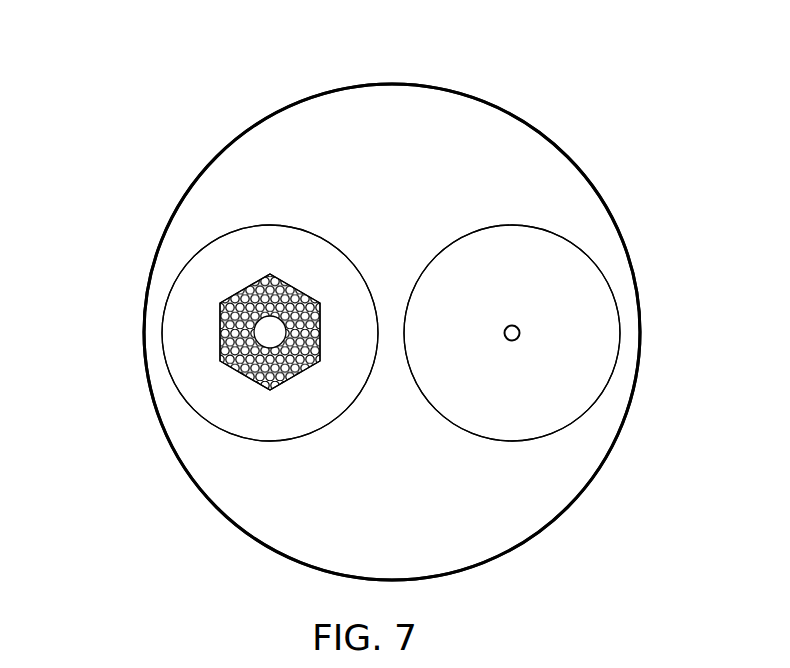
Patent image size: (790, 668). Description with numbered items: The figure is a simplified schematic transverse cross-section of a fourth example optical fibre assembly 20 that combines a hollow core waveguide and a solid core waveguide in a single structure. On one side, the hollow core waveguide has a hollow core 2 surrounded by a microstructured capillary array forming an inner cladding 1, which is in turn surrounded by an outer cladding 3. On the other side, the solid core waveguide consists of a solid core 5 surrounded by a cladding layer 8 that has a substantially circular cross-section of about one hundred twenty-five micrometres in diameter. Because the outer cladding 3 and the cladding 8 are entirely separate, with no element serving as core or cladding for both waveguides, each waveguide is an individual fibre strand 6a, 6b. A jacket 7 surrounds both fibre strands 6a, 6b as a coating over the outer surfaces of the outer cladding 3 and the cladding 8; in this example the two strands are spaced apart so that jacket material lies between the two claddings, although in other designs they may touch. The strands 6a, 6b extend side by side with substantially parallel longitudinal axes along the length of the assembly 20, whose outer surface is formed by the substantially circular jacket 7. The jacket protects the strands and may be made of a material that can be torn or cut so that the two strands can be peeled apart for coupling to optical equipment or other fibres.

The optical fibre assembly 20 is at (248, 82).
The jacket 7 is at (205, 462).
The fibre strand 6a is at (238, 226).
The fibre strand 6b is at (552, 227).
The outer cladding 3 is at (180, 392).
The hollow core 2 is at (226, 302).
The inner cladding 1 is at (270, 326).
The solid core 5 is at (521, 332).
The cladding layer 8 is at (570, 425).